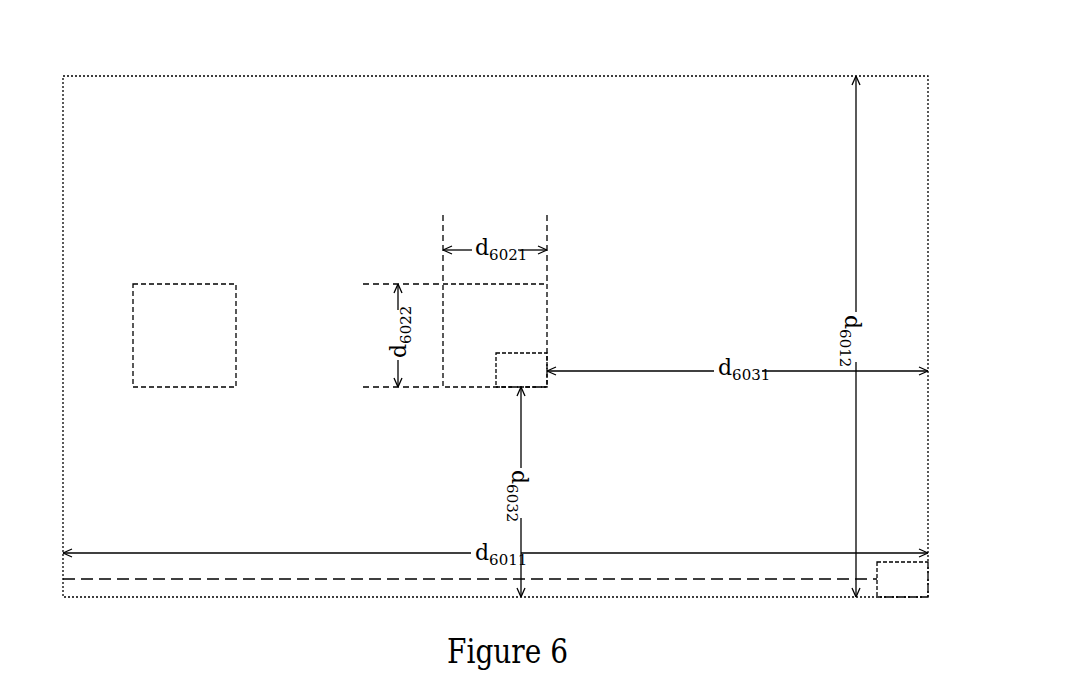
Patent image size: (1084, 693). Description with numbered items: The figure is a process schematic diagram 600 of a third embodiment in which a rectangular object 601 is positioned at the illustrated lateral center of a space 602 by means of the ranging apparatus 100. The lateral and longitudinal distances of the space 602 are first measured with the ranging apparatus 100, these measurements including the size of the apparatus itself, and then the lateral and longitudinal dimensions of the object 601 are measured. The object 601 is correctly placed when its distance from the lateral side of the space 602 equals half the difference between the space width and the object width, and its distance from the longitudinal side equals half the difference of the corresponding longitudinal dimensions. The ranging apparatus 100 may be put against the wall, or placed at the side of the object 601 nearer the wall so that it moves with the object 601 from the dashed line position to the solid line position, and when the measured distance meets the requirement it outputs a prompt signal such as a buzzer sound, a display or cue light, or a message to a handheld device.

The process schematic diagram 600 is at (495, 317).
The space 602 is at (110, 122).
The object 601 is at (206, 347).
The ranging apparatus 100 is at (543, 384).